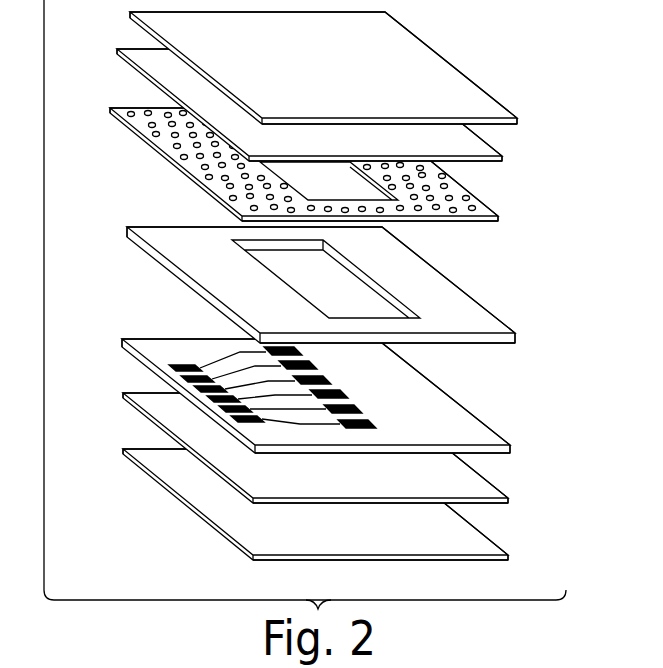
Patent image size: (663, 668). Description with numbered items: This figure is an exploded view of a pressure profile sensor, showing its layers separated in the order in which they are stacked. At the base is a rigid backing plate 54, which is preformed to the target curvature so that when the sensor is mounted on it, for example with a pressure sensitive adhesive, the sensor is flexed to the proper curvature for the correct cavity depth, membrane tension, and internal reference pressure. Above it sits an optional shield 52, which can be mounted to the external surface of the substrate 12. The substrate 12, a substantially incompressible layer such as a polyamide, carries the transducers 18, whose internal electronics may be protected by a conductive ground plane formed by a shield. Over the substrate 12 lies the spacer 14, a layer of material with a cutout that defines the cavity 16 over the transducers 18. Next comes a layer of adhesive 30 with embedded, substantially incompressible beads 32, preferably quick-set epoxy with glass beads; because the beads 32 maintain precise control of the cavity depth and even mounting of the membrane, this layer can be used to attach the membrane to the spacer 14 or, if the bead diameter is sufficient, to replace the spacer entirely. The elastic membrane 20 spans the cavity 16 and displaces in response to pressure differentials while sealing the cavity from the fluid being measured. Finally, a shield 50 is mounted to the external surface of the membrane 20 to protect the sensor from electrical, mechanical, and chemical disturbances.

The substrate 12 is at (482, 428).
The spacer 14 is at (332, 285).
The cavity 16 is at (383, 309).
The transducers 18 is at (377, 427).
The membrane 20 is at (503, 153).
The adhesive 30 is at (285, 164).
The beads 32 is at (154, 133).
The shield 50 is at (130, 14).
The optional shield 52 is at (140, 407).
The rigid backing plate 54 is at (177, 497).